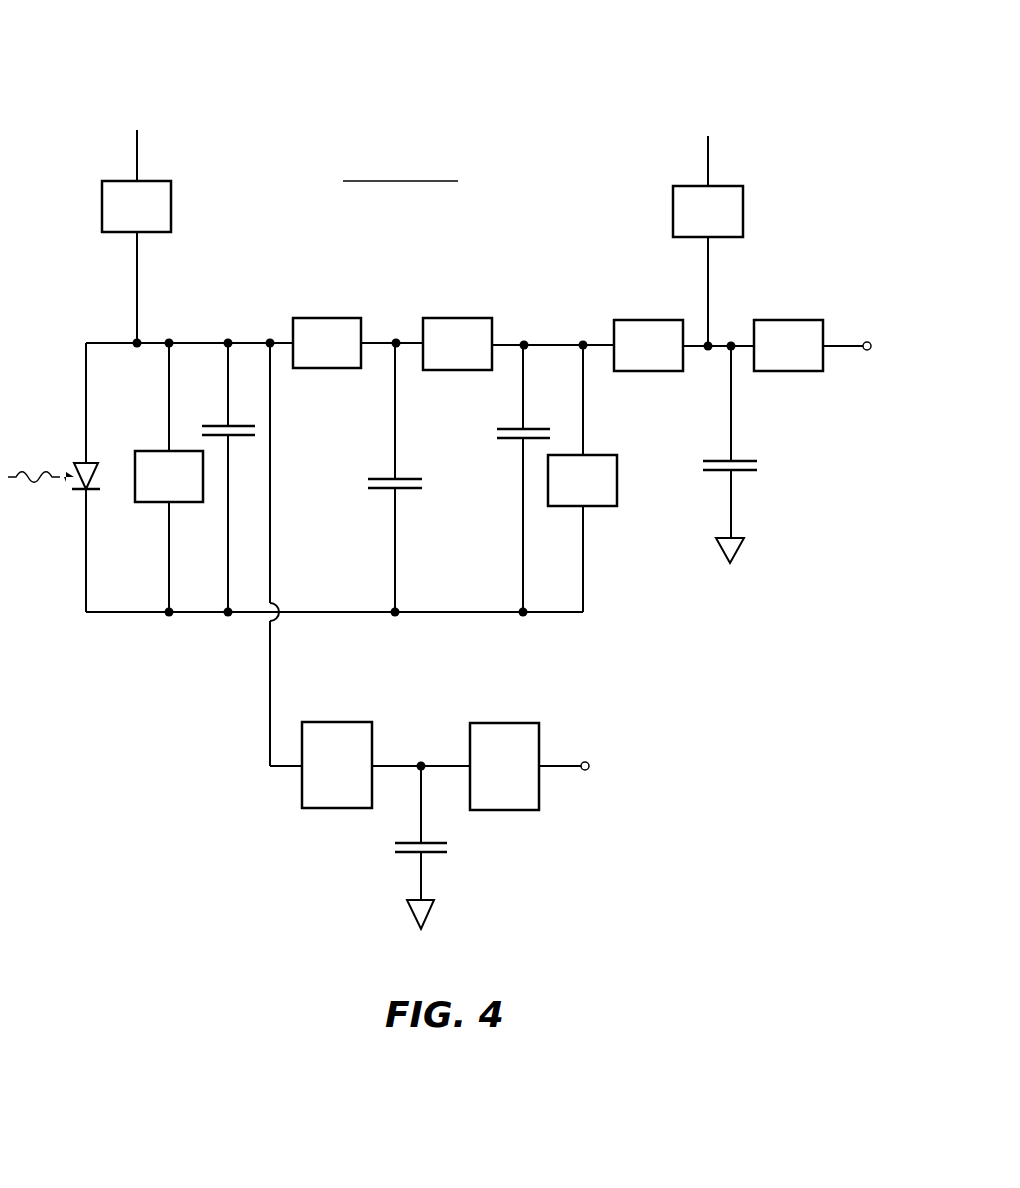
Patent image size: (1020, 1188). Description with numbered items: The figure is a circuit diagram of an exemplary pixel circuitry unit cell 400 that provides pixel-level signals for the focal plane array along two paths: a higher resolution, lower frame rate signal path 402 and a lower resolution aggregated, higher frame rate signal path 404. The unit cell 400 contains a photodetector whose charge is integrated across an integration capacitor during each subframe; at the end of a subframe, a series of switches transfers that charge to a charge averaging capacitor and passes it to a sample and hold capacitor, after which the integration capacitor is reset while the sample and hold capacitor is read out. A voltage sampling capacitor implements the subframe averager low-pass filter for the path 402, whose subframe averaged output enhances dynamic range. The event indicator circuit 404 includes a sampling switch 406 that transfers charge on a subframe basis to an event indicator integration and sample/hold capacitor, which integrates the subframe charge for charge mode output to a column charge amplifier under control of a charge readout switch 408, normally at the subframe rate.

The pixel circuitry unit cell 400 is at (583, 87).
The higher resolution, lower frame rate signal path 402 is at (473, 543).
The event indicator (aggregation) circuit 404 is at (372, 880).
The sampling switch 406 is at (356, 792).
The charge readout switch 408 is at (524, 792).